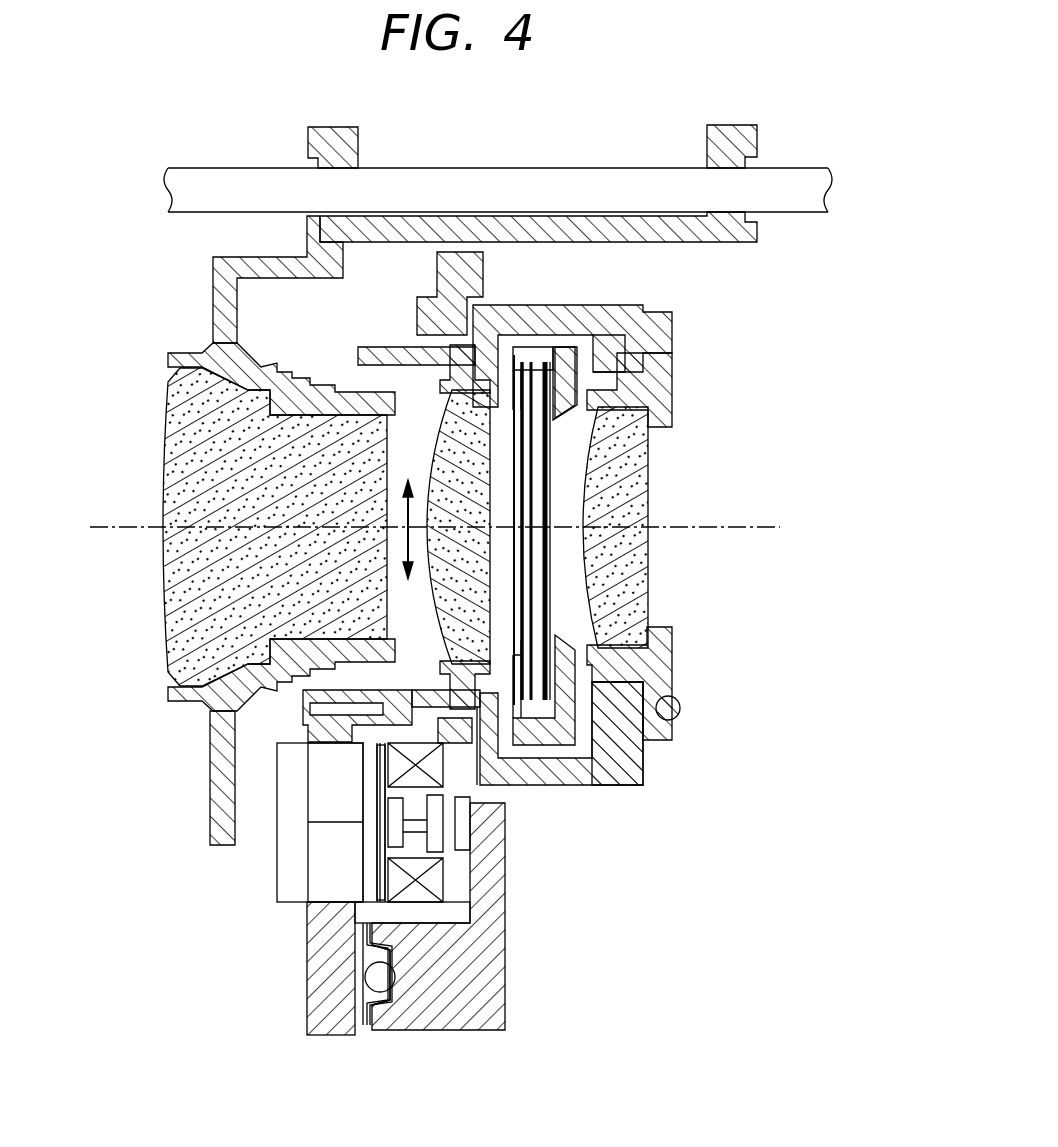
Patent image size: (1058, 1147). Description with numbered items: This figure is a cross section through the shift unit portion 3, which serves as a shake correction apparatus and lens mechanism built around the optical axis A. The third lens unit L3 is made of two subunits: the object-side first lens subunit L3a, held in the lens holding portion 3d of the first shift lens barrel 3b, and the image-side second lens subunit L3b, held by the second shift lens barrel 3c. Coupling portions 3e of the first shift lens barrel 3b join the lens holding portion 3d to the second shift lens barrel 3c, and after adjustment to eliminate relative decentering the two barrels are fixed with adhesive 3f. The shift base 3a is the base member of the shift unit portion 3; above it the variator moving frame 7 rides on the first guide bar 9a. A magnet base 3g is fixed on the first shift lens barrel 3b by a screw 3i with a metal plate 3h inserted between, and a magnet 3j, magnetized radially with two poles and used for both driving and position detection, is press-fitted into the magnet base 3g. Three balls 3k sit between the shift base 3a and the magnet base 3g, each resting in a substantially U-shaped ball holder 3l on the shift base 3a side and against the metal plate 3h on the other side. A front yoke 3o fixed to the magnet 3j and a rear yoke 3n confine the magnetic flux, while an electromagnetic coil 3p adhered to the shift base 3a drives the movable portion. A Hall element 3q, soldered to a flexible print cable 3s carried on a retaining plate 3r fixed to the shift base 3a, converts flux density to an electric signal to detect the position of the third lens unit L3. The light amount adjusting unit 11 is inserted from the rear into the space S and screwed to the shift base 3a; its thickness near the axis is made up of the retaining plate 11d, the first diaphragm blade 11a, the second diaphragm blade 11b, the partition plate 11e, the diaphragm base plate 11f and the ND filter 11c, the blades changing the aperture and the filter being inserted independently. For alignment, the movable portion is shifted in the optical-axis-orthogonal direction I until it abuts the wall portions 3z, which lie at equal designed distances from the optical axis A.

The first guide bar 9a is at (498, 172).
The variator moving frame 7 is at (264, 530).
The wall portions 3z is at (461, 545).
The coupling portions 3e is at (503, 596).
The lens holding portion 3d is at (451, 527).
The first shift lens barrel 3b is at (606, 356).
The second shift lens barrel 3c is at (662, 546).
The adhesive 3f is at (704, 704).
The space S is at (640, 734).
The third lens unit L3 is at (601, 527).
The first lens subunit L3a is at (576, 527).
The second lens subunit L3b is at (654, 527).
The light amount adjusting unit 11 is at (611, 496).
The first diaphragm blade 11a is at (549, 473).
The second diaphragm blade 11b is at (578, 480).
The ND filter 11c is at (636, 531).
The retaining plate 11d is at (506, 482).
The partition plate 11e is at (616, 336).
The diaphragm base plate 11f is at (658, 323).
The optical-axis-orthogonal direction I is at (407, 488).
The optical axis A is at (442, 493).
The screw 3i is at (330, 716).
The front yoke 3o is at (291, 836).
The magnet 3j is at (308, 863).
The flexible print cable 3s is at (313, 822).
The retaining plate 3r is at (299, 822).
The electromagnetic coil 3p is at (486, 822).
The rear yoke 3n is at (483, 854).
The Hall element 3q is at (460, 934).
The shift base 3a is at (476, 916).
The magnet base 3g is at (329, 1005).
The metal plate 3h is at (375, 1018).
The balls 3k is at (398, 1028).
The ball holder 3l is at (421, 1021).
The shift unit portion 3 is at (482, 886).